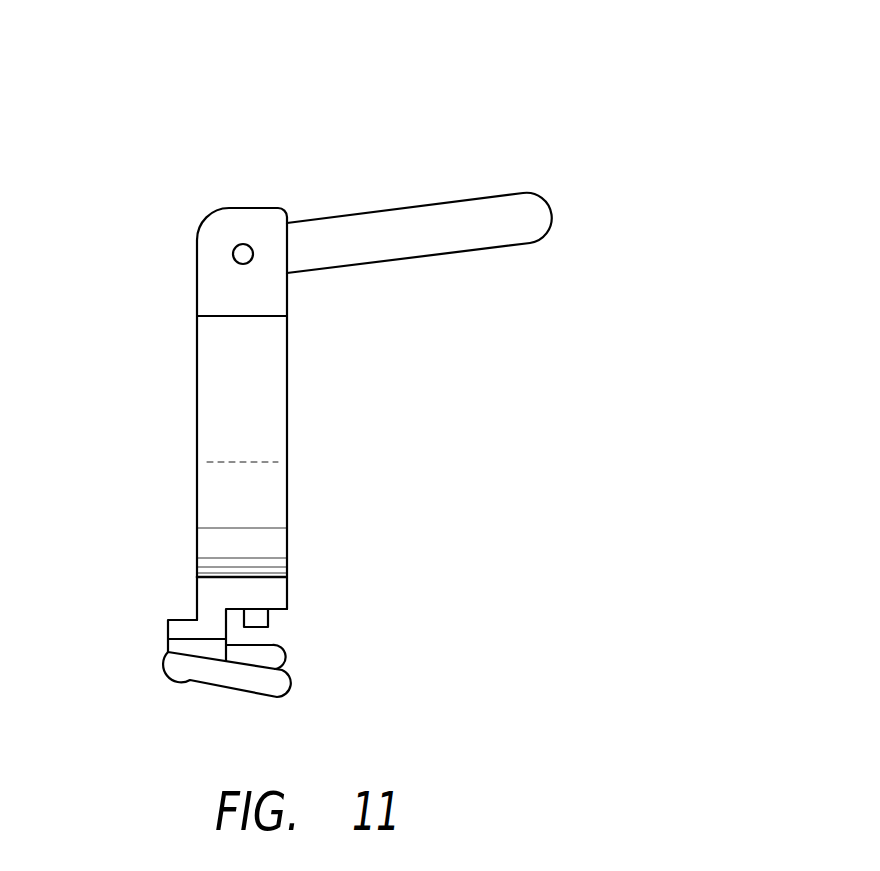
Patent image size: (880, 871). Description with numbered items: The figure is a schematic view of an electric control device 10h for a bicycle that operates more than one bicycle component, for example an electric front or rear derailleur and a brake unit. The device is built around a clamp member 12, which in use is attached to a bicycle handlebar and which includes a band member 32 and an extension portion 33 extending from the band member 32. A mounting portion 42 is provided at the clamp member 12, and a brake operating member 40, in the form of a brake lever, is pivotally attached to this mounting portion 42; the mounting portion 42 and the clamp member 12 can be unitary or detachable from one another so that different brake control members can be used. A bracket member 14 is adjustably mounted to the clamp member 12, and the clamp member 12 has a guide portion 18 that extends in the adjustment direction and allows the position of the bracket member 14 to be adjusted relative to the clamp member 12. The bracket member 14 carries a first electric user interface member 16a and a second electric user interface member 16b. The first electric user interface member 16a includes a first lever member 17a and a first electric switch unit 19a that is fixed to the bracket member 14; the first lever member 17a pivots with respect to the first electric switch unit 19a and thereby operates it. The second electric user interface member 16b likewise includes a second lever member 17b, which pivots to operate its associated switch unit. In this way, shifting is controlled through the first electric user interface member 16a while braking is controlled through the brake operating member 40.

The electric control device 10h is at (108, 118).
The brake operating member 40 is at (405, 207).
The mounting portion 42 is at (197, 242).
The band member 32 is at (280, 407).
The clamp member 12 is at (200, 547).
The extension portion 33 is at (200, 563).
The guide portion 18 is at (317, 572).
The bracket member 14 is at (270, 592).
The second electric user interface member 16b is at (323, 642).
The first electric switch unit 19a is at (159, 644).
The second lever member 17b is at (272, 658).
The first lever member 17a is at (272, 685).
The first electric user interface member 16a is at (172, 696).